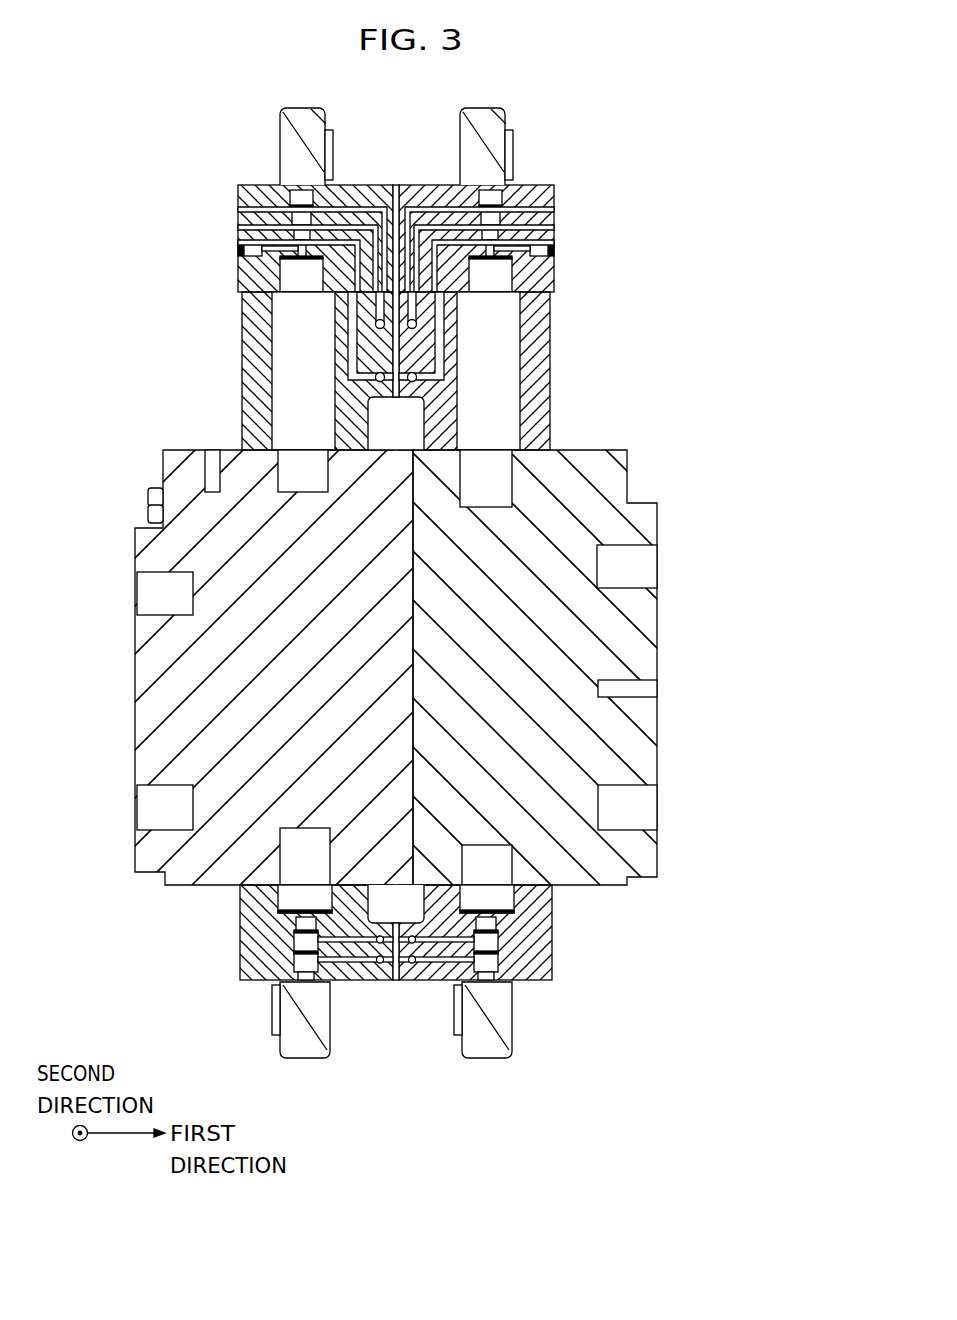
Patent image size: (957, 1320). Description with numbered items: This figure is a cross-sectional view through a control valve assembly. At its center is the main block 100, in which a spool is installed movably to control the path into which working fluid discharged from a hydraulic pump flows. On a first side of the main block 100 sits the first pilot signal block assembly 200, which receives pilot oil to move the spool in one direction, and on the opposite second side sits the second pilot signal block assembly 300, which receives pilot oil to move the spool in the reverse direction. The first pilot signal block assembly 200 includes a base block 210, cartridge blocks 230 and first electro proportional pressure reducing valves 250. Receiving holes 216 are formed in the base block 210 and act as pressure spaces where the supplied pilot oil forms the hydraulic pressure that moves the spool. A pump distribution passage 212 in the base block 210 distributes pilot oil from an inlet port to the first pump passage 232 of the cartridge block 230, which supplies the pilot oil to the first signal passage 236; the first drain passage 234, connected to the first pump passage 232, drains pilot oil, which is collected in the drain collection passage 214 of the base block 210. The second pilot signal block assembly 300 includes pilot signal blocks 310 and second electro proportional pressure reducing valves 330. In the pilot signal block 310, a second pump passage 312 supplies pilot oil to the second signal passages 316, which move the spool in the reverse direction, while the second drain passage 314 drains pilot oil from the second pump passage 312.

The main block 100 is at (690, 631).
The first pilot signal block assembly 200 is at (448, 279).
The base block 210 is at (250, 403).
The pump distribution passage 212 is at (348, 340).
The drain collection passage 214 is at (378, 312).
The receiving hole 216 is at (290, 381).
The cartridge block 230 is at (241, 283).
The first pump passage 232 is at (258, 210).
The first drain passage 234 is at (243, 190).
The first signal passage 236 is at (285, 276).
The first electro proportional pressure reducing valve 250 is at (288, 144).
The second pilot signal block assembly 300 is at (402, 1008).
The pilot signal block 310 is at (290, 940).
The second pump passage 312 is at (440, 937).
The second drain passage 314 is at (423, 958).
The second signal passage 316 is at (283, 906).
The second electro proportional pressure reducing valve 330 is at (505, 1023).